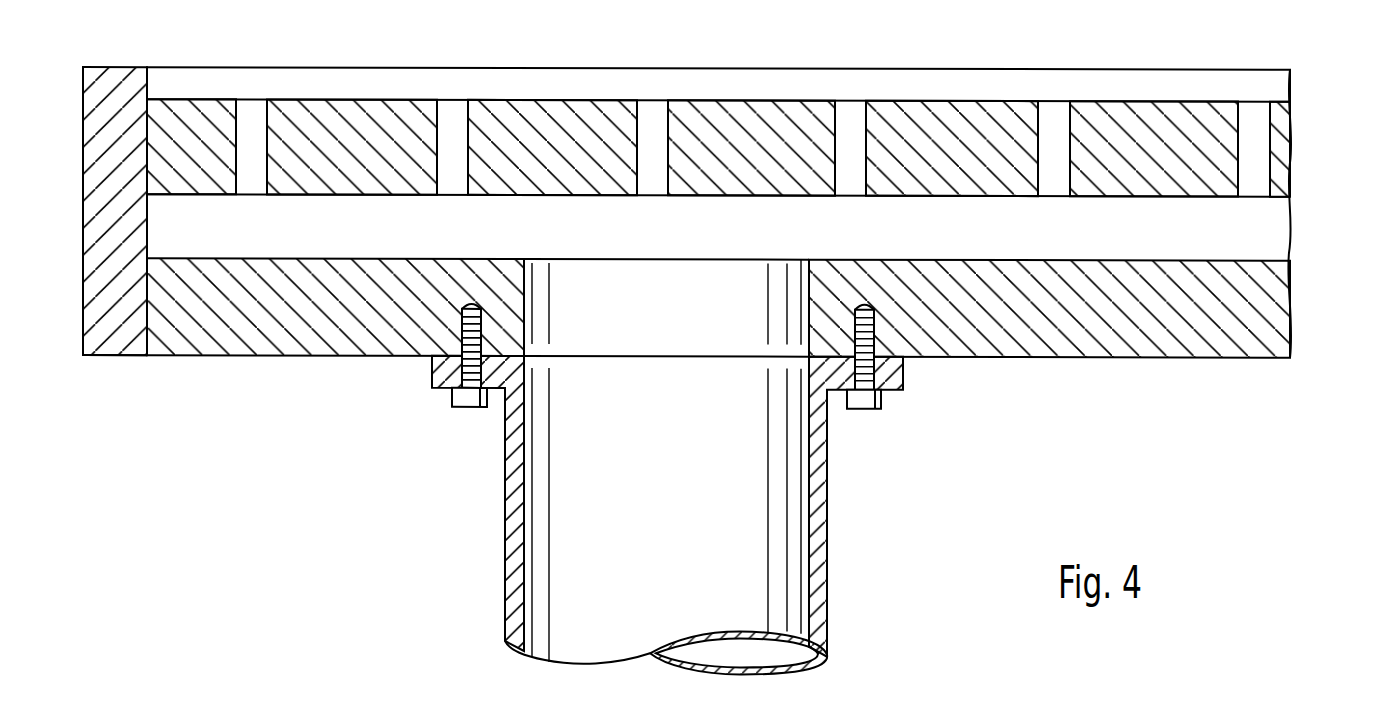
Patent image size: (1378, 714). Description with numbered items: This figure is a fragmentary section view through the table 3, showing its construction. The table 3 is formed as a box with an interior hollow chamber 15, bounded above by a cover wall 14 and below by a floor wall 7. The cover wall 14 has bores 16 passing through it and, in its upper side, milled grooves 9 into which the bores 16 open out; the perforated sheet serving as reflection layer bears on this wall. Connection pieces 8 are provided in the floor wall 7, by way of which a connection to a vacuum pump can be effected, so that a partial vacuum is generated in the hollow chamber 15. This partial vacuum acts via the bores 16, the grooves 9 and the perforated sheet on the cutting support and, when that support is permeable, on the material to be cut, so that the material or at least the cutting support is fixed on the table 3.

The table 3 is at (724, 340).
The floor wall 7 is at (1193, 344).
The connection pieces 8 is at (513, 497).
The milled grooves 9 is at (764, 78).
The cover wall 14 is at (1280, 144).
The hollow chamber 15 is at (945, 240).
The bores 16 is at (653, 110).